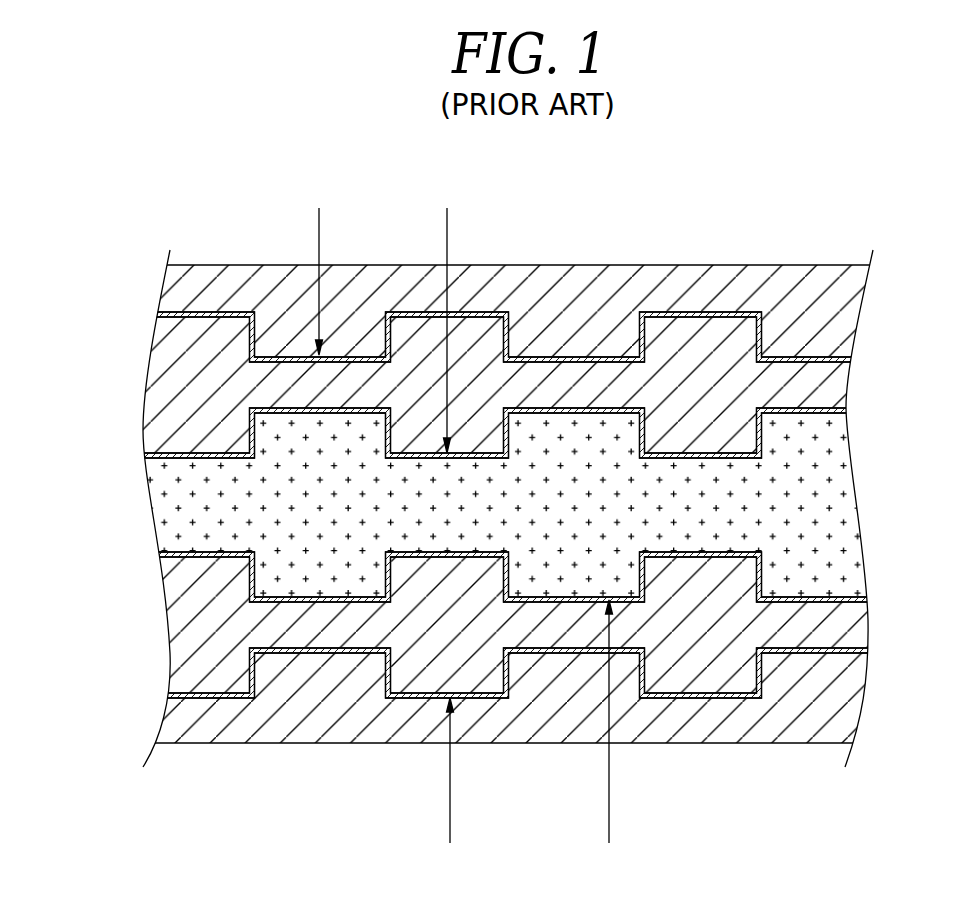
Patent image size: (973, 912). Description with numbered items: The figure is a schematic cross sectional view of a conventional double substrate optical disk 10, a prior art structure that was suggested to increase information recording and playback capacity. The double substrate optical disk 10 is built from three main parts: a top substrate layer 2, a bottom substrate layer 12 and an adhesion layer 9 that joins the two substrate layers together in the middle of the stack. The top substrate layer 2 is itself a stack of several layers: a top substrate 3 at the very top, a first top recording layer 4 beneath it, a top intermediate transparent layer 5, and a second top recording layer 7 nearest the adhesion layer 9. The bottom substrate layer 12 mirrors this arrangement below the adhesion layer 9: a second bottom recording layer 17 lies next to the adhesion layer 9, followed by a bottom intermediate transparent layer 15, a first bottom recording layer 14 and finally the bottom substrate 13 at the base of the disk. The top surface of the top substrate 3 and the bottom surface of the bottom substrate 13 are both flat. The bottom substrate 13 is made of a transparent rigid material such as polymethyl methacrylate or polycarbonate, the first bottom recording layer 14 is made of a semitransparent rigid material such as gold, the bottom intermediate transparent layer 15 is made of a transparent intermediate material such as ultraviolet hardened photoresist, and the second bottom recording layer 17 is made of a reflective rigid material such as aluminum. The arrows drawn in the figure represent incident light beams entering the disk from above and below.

The double substrate optical disk 10 is at (740, 178).
The top substrate layer 2 is at (128, 268).
The top substrate 3 is at (848, 307).
The first top recording layer 4 is at (837, 360).
The top intermediate transparent layer 5 is at (842, 385).
The second top recording layer 7 is at (840, 409).
The adhesion layer 9 is at (855, 499).
The bottom substrate layer 12 is at (130, 552).
The second bottom recording layer 17 is at (858, 598).
The bottom intermediate transparent layer 15 is at (855, 624).
The first bottom recording layer 14 is at (868, 648).
The bottom substrate 13 is at (853, 699).